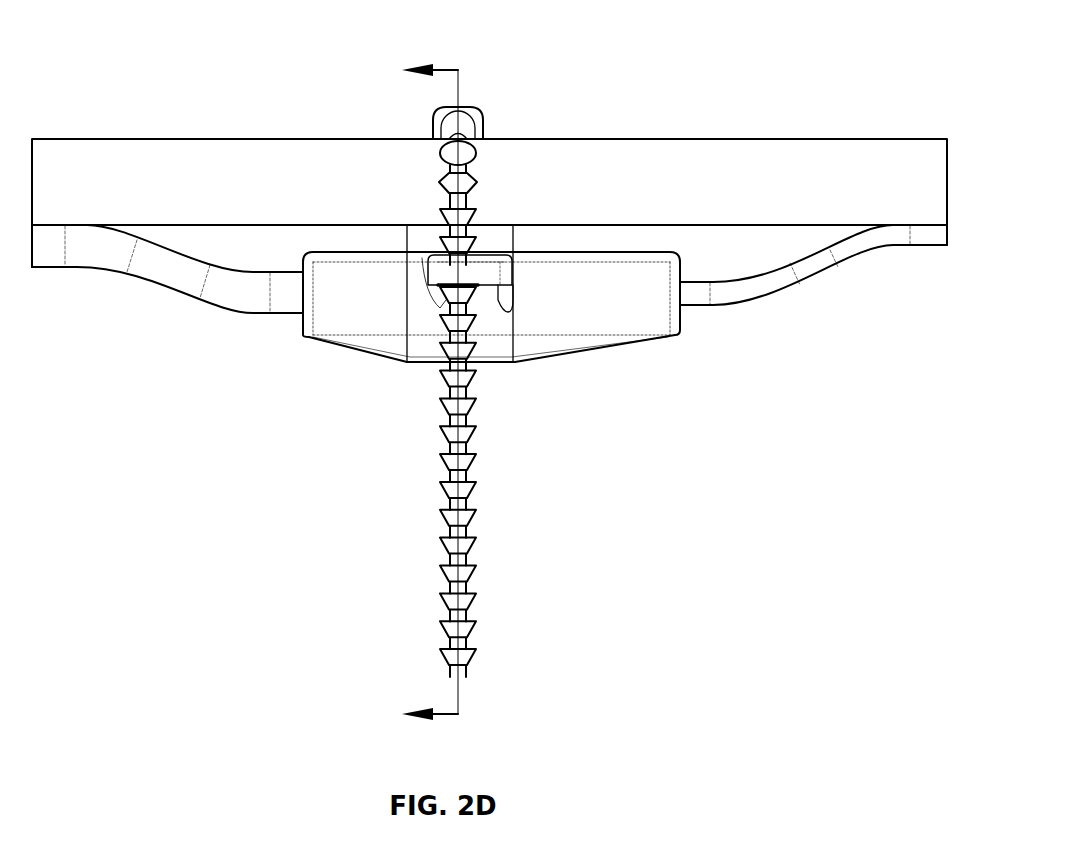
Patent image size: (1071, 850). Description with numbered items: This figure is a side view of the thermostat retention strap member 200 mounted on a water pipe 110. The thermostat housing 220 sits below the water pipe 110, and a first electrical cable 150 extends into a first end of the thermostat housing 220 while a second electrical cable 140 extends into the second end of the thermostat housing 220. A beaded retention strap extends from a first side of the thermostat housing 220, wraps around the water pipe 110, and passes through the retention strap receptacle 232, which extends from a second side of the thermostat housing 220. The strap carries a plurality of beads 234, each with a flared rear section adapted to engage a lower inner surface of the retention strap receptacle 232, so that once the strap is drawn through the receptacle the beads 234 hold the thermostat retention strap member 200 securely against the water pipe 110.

The thermostat retention strap member 200 is at (749, 38).
The water pipe 110 is at (720, 160).
The first electrical cable 150 is at (225, 297).
The second electrical cable 140 is at (762, 285).
The thermostat housing 220 is at (613, 312).
The retention strap receptacle 232 is at (443, 268).
The beads 234 is at (470, 488).